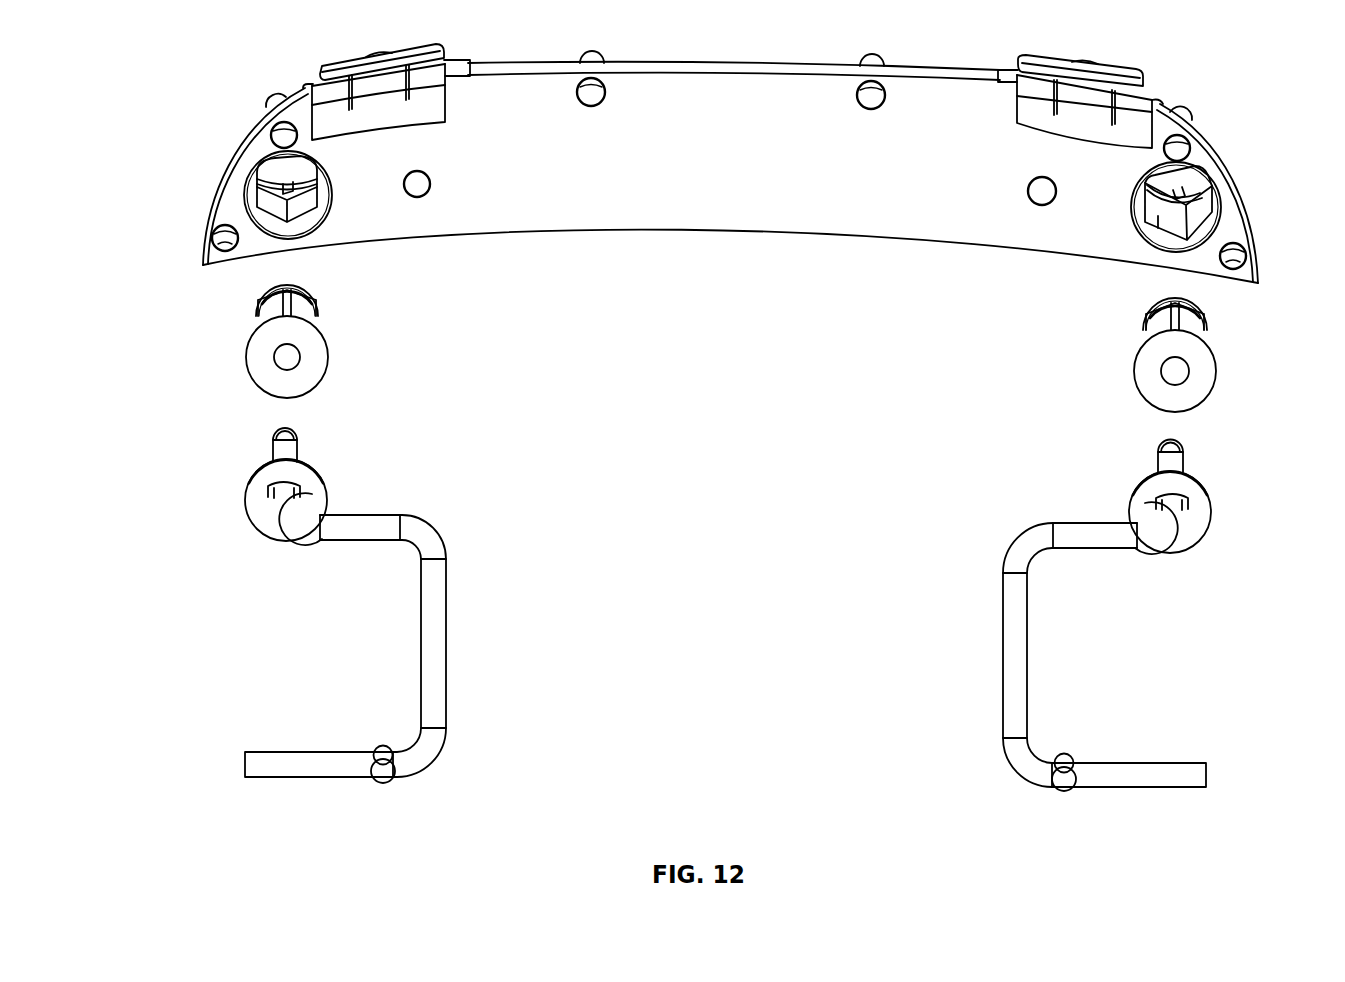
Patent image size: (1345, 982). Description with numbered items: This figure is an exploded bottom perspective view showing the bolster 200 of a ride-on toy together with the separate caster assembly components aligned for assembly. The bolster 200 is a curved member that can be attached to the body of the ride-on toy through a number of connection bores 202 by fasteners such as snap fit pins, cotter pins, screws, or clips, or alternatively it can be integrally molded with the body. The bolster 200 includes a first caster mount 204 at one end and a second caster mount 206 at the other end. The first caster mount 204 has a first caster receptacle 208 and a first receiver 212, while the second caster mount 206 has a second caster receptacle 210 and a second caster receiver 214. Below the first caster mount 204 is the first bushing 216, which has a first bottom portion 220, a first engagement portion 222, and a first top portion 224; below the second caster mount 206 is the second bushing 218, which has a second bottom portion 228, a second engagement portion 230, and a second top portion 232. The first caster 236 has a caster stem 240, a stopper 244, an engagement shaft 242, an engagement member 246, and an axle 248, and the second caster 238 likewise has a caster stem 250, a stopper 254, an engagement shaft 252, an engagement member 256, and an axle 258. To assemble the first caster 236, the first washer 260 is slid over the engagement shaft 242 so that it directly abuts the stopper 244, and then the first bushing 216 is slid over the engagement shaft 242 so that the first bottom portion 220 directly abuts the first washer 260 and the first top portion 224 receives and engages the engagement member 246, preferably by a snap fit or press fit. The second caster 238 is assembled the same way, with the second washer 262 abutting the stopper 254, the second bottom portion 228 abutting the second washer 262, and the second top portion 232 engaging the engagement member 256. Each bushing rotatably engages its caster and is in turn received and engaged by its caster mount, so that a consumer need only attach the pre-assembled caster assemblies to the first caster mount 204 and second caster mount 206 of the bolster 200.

The bolster 200 is at (728, 240).
The connection bore 202 is at (284, 124).
The first caster mount 204 is at (244, 208).
The second caster mount 206 is at (1218, 194).
The first caster receptacle 208 is at (252, 176).
The second caster receptacle 210 is at (1158, 218).
The first receiver 212 is at (284, 168).
The second caster receiver 214 is at (1190, 180).
The first bushing 216 is at (299, 359).
The second bushing 218 is at (1164, 366).
The first bottom portion 220 is at (262, 368).
The first engagement portion 222 is at (262, 314).
The first top portion 224 is at (272, 292).
The second bottom portion 228 is at (1207, 368).
The second engagement portion 230 is at (1206, 330).
The second top portion 232 is at (1200, 304).
The first caster 236 is at (371, 612).
The second caster 238 is at (1091, 619).
The caster stem 240 is at (423, 520).
The engagement shaft 242 is at (297, 452).
The stopper 244 is at (262, 506).
The engagement member 246 is at (300, 436).
The axle 248 is at (322, 779).
The caster stem 250 is at (1035, 525).
The engagement shaft 252 is at (1184, 462).
The stopper 254 is at (1205, 508).
The engagement member 256 is at (1163, 444).
The axle 258 is at (1140, 790).
The first washer 260 is at (262, 525).
The second washer 262 is at (1197, 530).